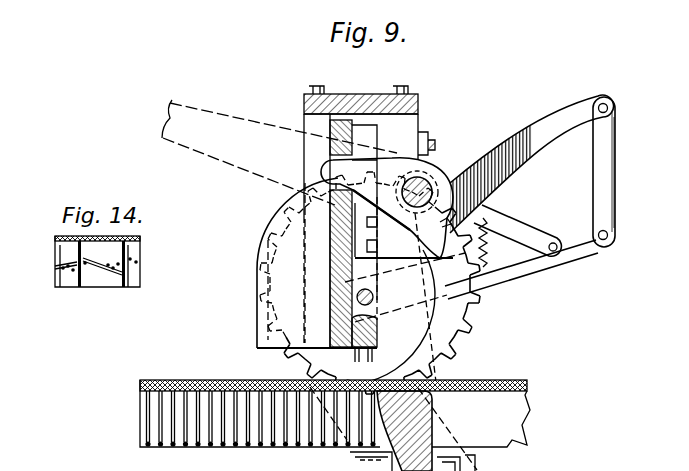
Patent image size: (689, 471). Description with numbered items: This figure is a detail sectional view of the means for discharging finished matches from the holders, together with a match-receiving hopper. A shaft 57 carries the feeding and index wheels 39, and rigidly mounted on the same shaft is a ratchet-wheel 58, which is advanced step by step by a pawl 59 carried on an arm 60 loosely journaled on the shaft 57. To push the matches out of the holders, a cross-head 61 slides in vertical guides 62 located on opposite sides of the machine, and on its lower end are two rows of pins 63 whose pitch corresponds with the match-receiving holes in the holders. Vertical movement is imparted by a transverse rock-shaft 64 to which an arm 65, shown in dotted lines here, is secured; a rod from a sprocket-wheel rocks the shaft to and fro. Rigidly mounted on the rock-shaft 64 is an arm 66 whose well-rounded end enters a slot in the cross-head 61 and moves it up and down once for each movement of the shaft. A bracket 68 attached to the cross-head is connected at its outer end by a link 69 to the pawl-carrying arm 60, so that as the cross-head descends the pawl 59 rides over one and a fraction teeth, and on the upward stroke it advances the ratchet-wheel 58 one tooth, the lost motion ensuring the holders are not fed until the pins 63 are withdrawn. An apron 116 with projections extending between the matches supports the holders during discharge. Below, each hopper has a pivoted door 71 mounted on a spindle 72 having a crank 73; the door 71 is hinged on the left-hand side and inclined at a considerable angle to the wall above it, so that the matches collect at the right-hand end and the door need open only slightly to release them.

In FIG. 9, the feeding and index wheels 39 is at (396, 317).
In FIG. 9, the shaft 57 is at (374, 297).
In FIG. 9, the ratchet-wheel 58 is at (463, 334).
In FIG. 9, the pawl 59 is at (519, 223).
In FIG. 9, the arm 60 is at (584, 250).
In FIG. 9, the cross-head 61 is at (338, 258).
In FIG. 9, the vertical guides 62 is at (311, 150).
In FIG. 9, the pins 63 is at (356, 356).
In FIG. 9, the transverse rock-shaft 64 is at (428, 181).
In FIG. 9, the arm 65 is at (224, 150).
In FIG. 9, the arm 66 is at (393, 165).
In FIG. 9, the bracket 68 is at (580, 104).
In FIG. 9, the link 69 is at (606, 170).
In FIG. 14, the link 69 is at (110, 244).
In FIG. 14, the pivoted door 71 is at (103, 287).
In FIG. 14, the spindle 72 is at (62, 255).
In FIG. 9, the crank 73 is at (352, 460).
In FIG. 9, the apron 116 is at (437, 428).